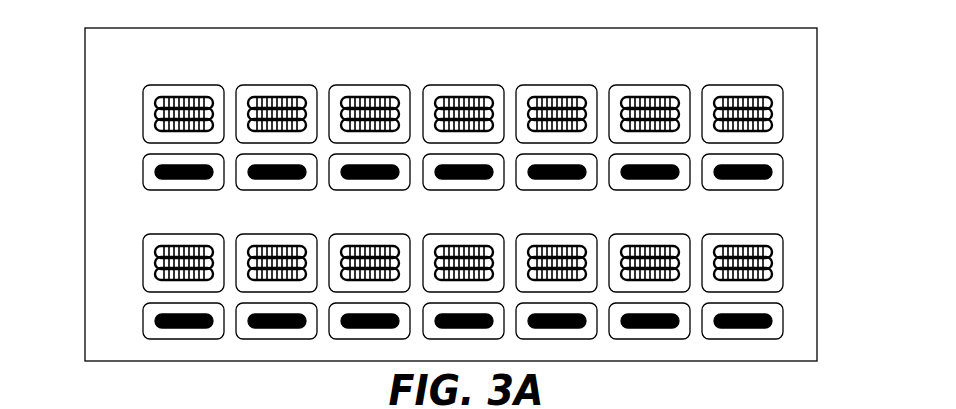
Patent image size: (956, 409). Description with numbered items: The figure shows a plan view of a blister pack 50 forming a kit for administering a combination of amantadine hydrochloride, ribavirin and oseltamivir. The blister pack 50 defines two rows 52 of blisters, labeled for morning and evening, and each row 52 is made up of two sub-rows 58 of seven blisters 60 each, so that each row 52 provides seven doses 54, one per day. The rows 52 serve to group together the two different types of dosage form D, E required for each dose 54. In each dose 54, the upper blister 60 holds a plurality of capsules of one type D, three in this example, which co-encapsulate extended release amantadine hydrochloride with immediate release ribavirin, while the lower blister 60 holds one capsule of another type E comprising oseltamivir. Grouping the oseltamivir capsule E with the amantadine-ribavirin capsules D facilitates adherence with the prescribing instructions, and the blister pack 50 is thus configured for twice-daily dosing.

The blister pack 50 is at (510, 38).
The row 52 is at (96, 129).
The dose 54 is at (241, 78).
The sub-row 58 is at (141, 81).
The blister 60 is at (778, 90).
The capsule of one type D is at (770, 125).
The capsule of another type E is at (770, 172).